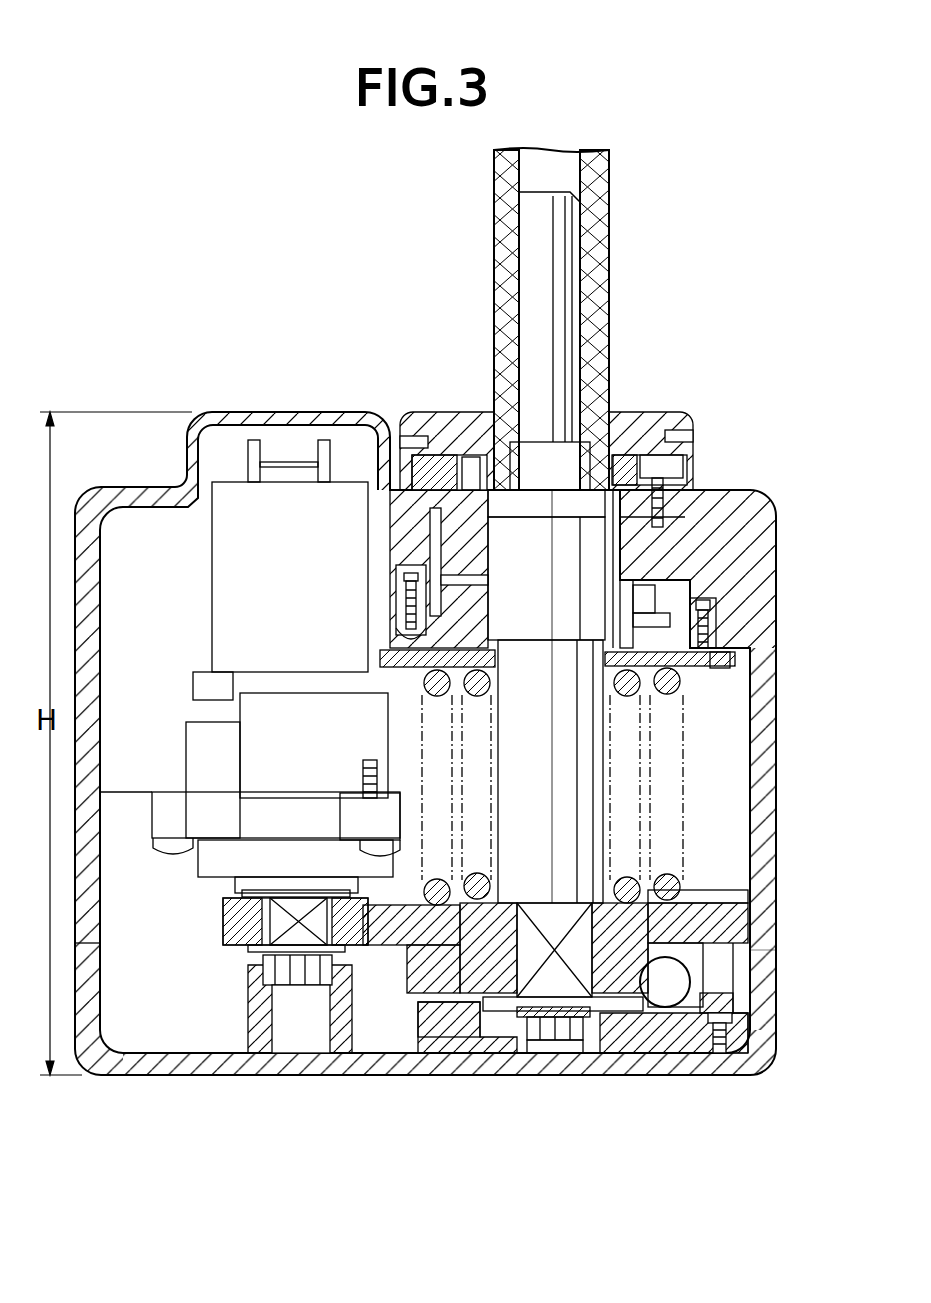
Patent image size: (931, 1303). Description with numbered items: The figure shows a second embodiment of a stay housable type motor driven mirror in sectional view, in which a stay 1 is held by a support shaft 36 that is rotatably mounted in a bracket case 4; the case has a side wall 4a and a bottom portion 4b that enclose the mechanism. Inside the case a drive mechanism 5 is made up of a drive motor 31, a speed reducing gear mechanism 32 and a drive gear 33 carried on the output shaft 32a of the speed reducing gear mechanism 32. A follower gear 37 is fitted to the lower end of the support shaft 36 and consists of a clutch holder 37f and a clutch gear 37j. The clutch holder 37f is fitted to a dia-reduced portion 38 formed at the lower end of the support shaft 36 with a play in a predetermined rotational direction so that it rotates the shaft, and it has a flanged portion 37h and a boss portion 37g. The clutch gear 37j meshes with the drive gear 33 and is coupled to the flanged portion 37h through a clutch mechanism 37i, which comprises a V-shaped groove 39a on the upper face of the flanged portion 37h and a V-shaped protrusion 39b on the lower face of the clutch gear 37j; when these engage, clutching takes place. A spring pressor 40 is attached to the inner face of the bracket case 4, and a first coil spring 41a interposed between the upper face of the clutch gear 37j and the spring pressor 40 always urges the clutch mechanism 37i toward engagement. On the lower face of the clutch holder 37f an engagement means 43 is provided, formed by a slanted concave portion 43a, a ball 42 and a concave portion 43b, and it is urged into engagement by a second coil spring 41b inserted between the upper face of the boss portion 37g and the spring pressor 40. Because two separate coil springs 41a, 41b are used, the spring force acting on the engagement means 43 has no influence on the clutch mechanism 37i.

The stay 1 is at (603, 280).
The bracket case 4 is at (731, 489).
The housing side wall 4a is at (773, 968).
The housing bottom portion 4b is at (436, 1060).
The drive mechanism 5 is at (185, 690).
The drive motor 31 is at (228, 545).
The speed reducing gear mechanism 32 is at (270, 757).
The output shaft 32a is at (296, 1067).
The drive gear 33 is at (245, 948).
The support shaft 36 is at (573, 708).
The follower gear 37 is at (805, 1115).
The clutch holder 37f is at (543, 1030).
The boss portion 37g is at (598, 1045).
The flanged portion 37h is at (680, 1015).
The clutch mechanism 37i is at (727, 1055).
The clutch gear 37j is at (760, 1030).
The dia-reduced portion 38 is at (495, 1000).
The V-shaped groove 39a is at (402, 948).
The V-shaped protrusion 39b is at (420, 1004).
The spring pressor 40 is at (675, 628).
The first coil spring 41a is at (650, 786).
The second coil spring 41b is at (625, 760).
The ball 42 is at (669, 956).
The engagement means 43 is at (826, 793).
The slanted concave portion 43a is at (708, 948).
The concave portion 43b is at (665, 888).